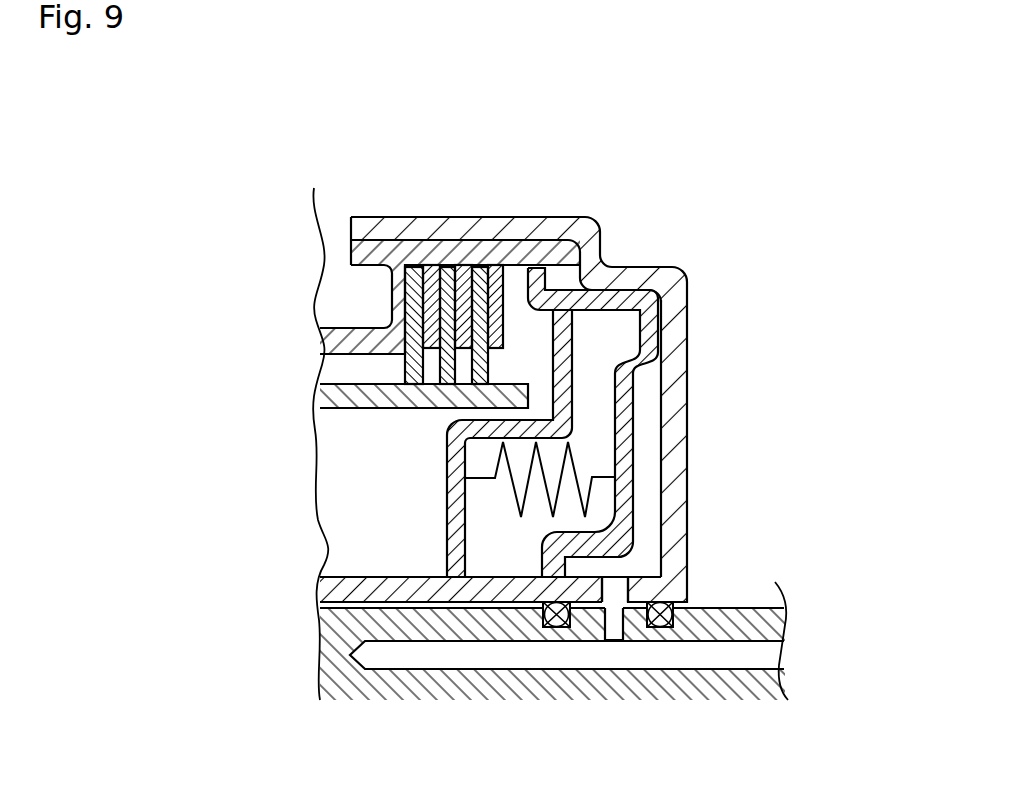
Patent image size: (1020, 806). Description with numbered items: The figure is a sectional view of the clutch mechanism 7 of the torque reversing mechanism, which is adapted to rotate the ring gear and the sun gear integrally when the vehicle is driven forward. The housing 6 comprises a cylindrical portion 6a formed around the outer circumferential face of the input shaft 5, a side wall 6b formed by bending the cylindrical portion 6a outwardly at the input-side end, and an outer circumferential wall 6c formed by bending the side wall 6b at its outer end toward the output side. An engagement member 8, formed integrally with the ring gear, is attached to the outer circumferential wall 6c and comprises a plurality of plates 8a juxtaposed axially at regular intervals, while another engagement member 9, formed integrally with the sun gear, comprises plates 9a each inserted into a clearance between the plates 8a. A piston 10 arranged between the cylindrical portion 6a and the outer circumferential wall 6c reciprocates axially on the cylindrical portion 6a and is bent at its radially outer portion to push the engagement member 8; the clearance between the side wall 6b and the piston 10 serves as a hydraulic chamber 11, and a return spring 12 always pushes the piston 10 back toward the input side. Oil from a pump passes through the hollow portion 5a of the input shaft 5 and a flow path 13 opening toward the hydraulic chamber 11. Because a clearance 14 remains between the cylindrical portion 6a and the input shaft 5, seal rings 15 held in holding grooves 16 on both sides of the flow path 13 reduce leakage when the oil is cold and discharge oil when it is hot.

The input shaft 5 is at (762, 617).
The hollow portion 5a is at (760, 650).
The housing 6 is at (733, 303).
The cylindrical portion 6a is at (343, 577).
The side wall 6b is at (672, 388).
The outer circumferential wall 6c is at (535, 230).
The clutch mechanism 7 is at (752, 198).
The engagement member 8 is at (367, 293).
The plates 8a is at (494, 270).
The engagement member 9 is at (380, 368).
The plates 9a is at (415, 353).
The piston 10 is at (625, 500).
The hydraulic chamber 11 is at (642, 450).
The return spring 12 is at (510, 487).
The flow path 13 is at (613, 624).
The clearance 14 is at (636, 608).
The seal ring 15 is at (650, 602).
The holding groove 16 is at (562, 630).